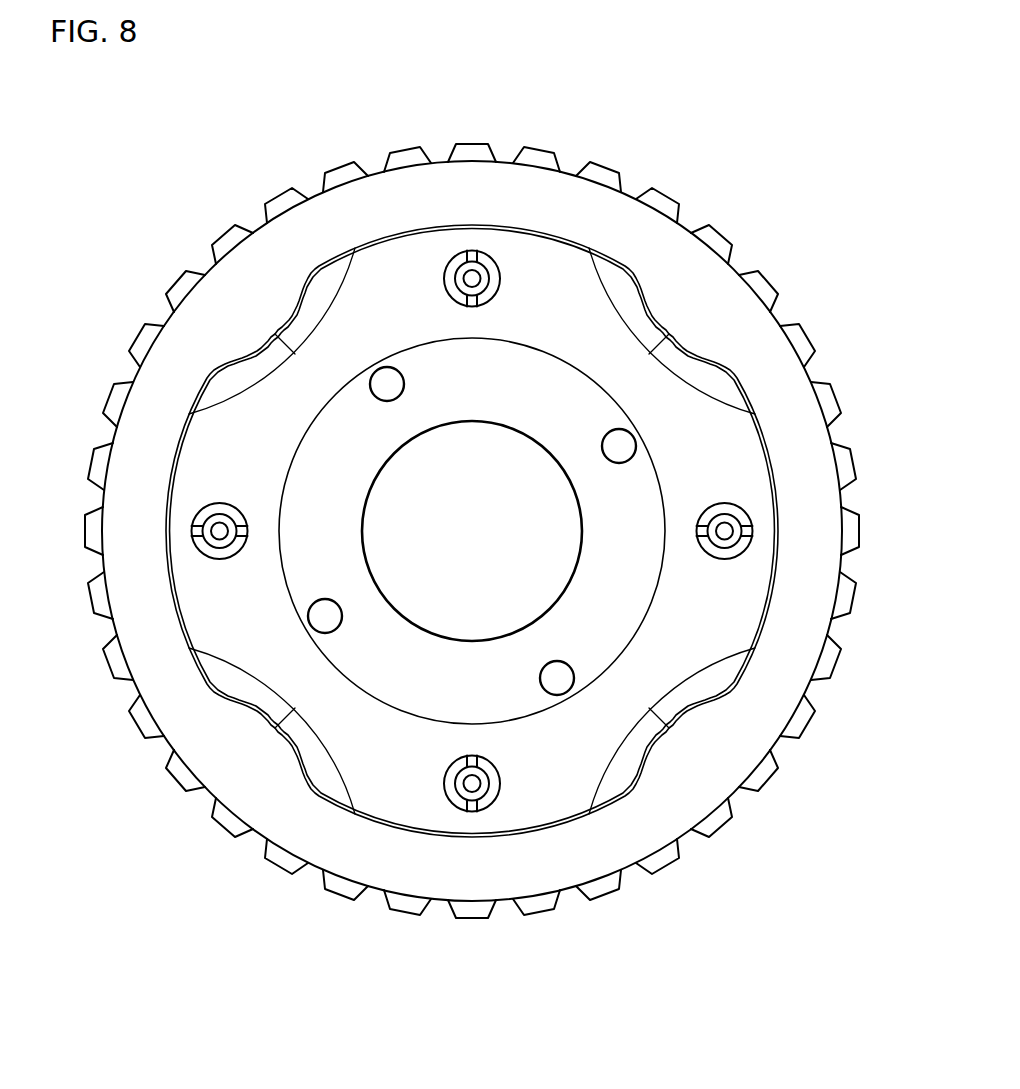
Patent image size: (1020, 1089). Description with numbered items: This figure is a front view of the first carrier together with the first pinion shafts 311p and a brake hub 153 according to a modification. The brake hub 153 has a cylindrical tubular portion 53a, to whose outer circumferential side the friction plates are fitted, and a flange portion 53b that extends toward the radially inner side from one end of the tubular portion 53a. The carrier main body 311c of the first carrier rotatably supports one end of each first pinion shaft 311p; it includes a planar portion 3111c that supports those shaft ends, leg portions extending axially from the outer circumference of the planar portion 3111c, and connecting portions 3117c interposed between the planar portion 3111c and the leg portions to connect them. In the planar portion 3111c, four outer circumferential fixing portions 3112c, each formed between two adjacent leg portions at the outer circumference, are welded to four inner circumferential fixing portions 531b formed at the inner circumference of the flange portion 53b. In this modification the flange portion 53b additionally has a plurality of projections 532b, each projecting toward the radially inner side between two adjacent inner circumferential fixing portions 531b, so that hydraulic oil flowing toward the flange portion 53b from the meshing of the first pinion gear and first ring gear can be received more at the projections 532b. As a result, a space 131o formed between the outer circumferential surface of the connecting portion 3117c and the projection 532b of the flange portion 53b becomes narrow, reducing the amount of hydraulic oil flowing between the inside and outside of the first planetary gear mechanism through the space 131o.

The brake hub 153 is at (634, 167).
The tubular portion 53a is at (570, 168).
The flange portion 53b is at (530, 208).
The inner circumferential fixing portion 531b is at (473, 225).
The outer circumferential fixing portion 3112c is at (450, 225).
The projection 532b is at (664, 326).
The connecting portion 3117c is at (305, 317).
The space 131o is at (292, 324).
The planar portion 3111c is at (287, 400).
The carrier main body 311c is at (245, 410).
The first pinion shaft 311p is at (444, 784).